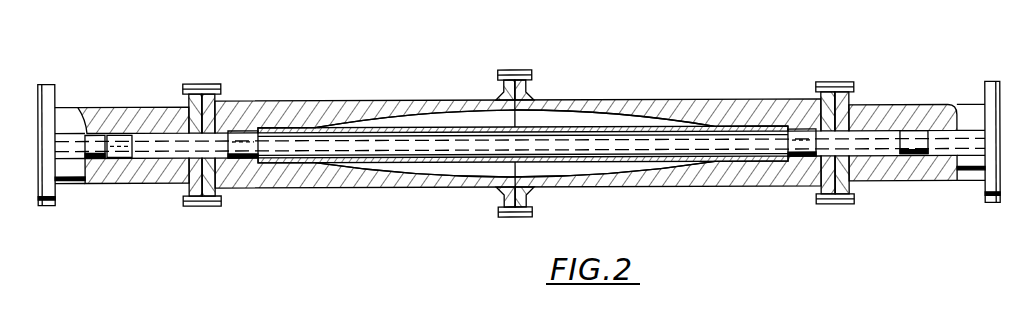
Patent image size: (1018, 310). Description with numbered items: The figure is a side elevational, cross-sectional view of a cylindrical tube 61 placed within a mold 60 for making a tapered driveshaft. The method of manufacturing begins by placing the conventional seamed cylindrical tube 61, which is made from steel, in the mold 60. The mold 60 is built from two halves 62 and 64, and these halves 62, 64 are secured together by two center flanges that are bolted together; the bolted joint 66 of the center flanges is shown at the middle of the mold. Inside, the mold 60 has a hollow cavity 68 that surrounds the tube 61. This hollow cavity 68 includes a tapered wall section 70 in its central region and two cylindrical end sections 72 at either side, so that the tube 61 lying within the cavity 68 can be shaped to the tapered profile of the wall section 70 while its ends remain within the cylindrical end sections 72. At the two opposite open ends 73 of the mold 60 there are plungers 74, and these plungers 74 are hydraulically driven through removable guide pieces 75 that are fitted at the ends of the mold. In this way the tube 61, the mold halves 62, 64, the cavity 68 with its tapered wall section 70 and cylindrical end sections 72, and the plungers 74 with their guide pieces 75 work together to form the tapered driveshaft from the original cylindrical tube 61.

The mold 60 is at (633, 91).
The cylindrical tube 61 is at (468, 128).
The mold half 62 is at (718, 112).
The mold half 64 is at (363, 108).
The center bolt 66 is at (521, 69).
The hollow cavity 68 is at (533, 123).
The tapered wall section 70 is at (596, 118).
The cylindrical end sections 72 is at (267, 127).
The open ends 73 is at (200, 138).
The plungers 74 is at (247, 130).
The removable guide pieces 75 is at (133, 177).